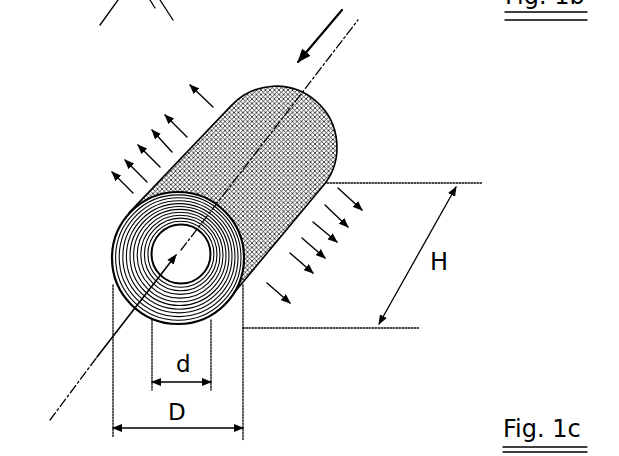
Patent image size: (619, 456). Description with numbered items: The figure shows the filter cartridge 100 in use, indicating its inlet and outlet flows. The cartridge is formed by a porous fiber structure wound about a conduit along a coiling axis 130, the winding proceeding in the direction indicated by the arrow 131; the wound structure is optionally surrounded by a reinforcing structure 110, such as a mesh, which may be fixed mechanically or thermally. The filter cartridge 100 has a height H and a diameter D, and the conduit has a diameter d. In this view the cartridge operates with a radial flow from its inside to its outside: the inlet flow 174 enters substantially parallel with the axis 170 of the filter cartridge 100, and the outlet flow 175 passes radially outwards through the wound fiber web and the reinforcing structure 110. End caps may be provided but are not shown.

The filter cartridge 100 is at (346, 31).
The reinforcing structure 110 is at (338, 138).
The coiling axis 130 is at (197, 13).
The arrow 131 is at (80, 15).
The axis 170 is at (234, 220).
The inlet flow 174 is at (94, 306).
The outlet flow 175 is at (245, 193).